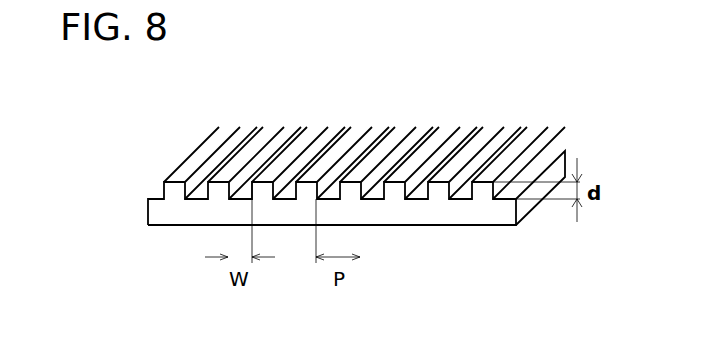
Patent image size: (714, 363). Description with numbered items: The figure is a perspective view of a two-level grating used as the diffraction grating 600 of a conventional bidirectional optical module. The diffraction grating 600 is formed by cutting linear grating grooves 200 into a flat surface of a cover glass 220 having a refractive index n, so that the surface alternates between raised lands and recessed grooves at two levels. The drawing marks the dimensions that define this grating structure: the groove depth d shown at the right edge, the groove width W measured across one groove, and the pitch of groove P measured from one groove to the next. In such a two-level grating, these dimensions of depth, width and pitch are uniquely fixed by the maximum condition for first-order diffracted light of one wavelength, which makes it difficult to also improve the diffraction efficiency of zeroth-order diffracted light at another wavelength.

The linear grating grooves 200 is at (240, 198).
The diffraction grating 600 is at (400, 135).
The cover glass 220 is at (165, 214).